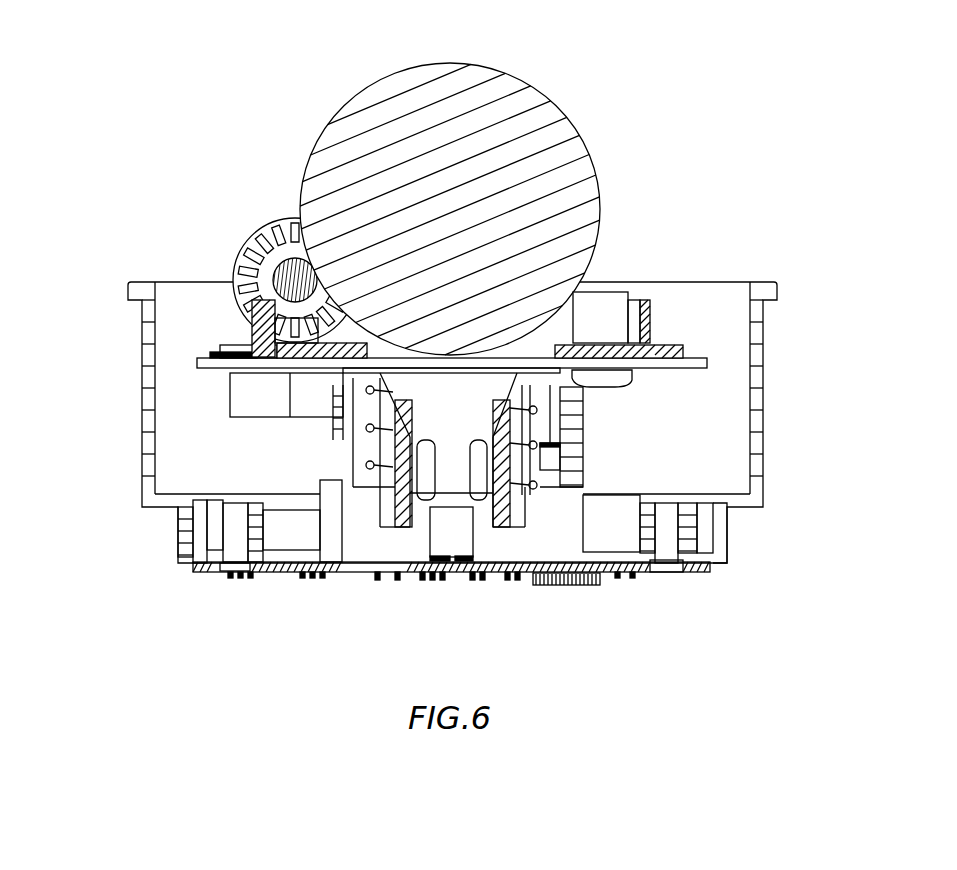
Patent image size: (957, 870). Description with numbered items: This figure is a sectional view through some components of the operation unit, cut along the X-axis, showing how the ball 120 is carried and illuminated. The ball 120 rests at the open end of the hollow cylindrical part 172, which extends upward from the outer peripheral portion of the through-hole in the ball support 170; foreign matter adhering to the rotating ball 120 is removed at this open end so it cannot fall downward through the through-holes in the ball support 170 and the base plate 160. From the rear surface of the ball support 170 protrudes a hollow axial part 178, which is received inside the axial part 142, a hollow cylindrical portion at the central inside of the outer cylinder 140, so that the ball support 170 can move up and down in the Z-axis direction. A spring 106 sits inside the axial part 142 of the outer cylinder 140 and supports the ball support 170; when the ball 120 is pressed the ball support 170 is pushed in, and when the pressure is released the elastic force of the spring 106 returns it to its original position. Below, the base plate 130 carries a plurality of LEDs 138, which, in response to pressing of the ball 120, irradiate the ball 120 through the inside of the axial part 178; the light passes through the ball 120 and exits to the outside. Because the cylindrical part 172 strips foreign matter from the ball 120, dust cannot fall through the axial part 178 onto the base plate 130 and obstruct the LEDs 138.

The spring 106 is at (370, 424).
The ball 120 is at (400, 78).
The base plate 130 is at (710, 568).
The LEDs 138 is at (423, 548).
The outer cylinder 140 is at (758, 483).
The axial part 142 is at (710, 503).
The base plate 160 is at (707, 363).
The ball support 170 is at (647, 315).
The cylindrical part 172 is at (552, 330).
The axial part 178 is at (562, 458).